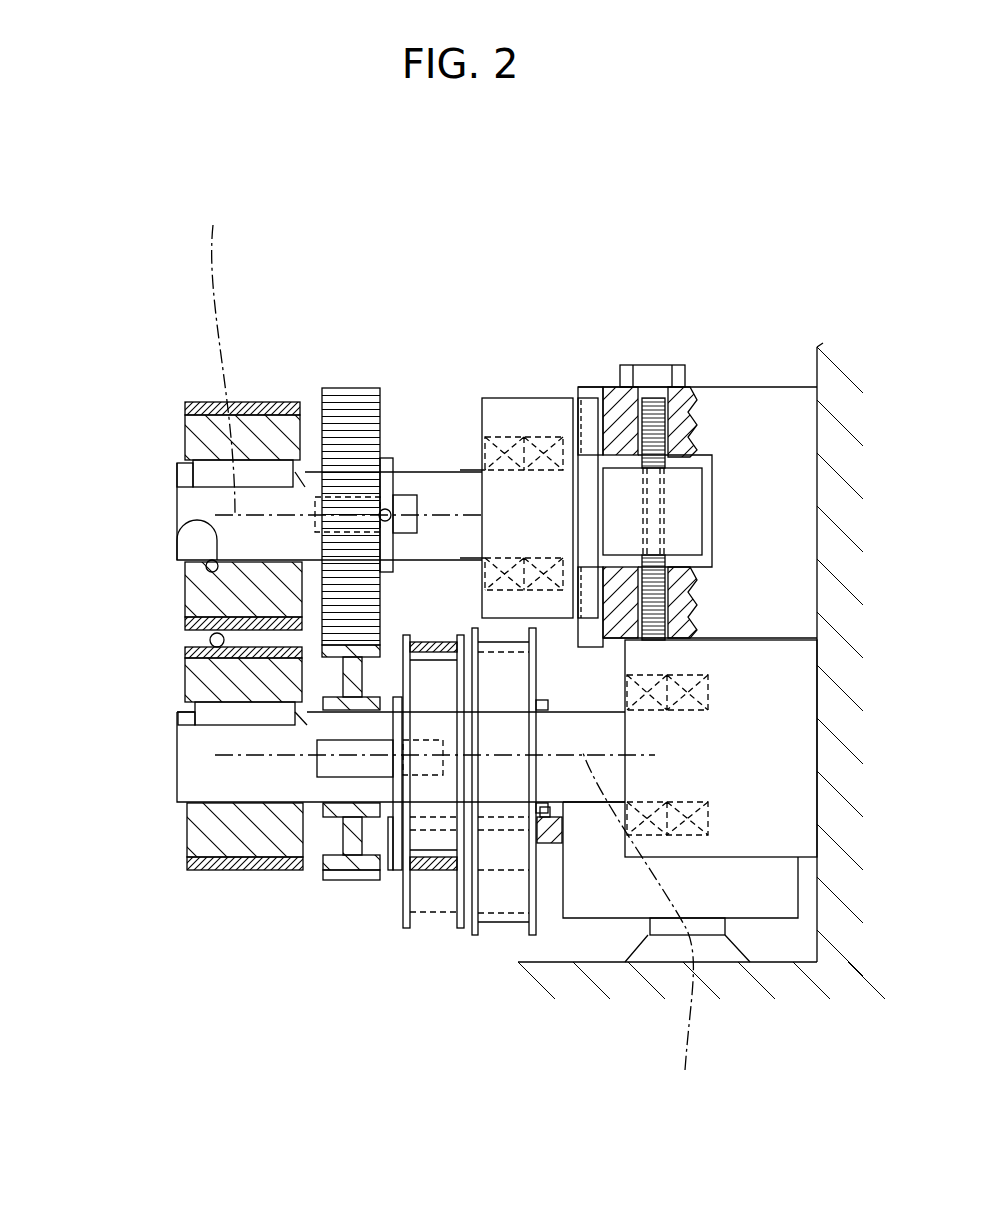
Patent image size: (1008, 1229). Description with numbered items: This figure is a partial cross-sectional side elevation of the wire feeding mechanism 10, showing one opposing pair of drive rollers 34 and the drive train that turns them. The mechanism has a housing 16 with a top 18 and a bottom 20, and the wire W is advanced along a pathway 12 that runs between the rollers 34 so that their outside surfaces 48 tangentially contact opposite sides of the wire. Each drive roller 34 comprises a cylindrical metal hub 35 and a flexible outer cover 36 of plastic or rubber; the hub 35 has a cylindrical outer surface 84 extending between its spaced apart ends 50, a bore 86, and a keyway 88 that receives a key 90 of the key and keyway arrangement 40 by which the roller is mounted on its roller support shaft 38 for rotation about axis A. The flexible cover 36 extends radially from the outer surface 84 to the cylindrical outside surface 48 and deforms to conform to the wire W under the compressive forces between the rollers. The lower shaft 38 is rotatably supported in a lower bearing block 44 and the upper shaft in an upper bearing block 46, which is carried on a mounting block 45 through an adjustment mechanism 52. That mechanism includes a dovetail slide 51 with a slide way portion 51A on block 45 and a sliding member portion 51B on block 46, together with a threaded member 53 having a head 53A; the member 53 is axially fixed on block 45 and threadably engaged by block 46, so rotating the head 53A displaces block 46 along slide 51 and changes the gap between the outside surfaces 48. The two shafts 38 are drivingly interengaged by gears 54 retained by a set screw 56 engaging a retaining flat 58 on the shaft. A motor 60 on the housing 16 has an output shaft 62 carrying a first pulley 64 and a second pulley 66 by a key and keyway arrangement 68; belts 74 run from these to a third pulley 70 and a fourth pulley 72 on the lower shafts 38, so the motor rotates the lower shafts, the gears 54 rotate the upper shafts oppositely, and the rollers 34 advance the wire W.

The wire feeding mechanism 10 is at (150, 232).
The pathway 12 is at (190, 641).
The housing 16 is at (817, 493).
The top 18 is at (819, 345).
The bottom 20 is at (789, 950).
The drive roller 34 is at (140, 428).
The hub 35 is at (182, 455).
The flexible cover 36 is at (182, 407).
The roller support shaft 38 is at (200, 762).
The key and keyway arrangement 40 is at (255, 455).
The lower bearing block 44 is at (787, 830).
The mounting block 45 is at (787, 537).
The upper bearing block 46 is at (495, 412).
The cylindrical outside surface 48 is at (236, 412).
The ends 50 is at (307, 425).
The dovetail slide 51 is at (590, 600).
The slide way portion 51A is at (590, 395).
The sliding member portion 51B is at (604, 420).
The adjustment mechanism 52 is at (682, 455).
The threaded member 53 is at (677, 615).
The head 53A is at (664, 365).
The gear 54 is at (316, 388).
The set screw 56 is at (400, 560).
The retaining flat 58 is at (400, 503).
The motor 60 is at (626, 897).
The output shaft 62 is at (557, 850).
The first pulley 64 is at (475, 935).
The second pulley 66 is at (405, 897).
The key and keyway arrangement 68 is at (540, 833).
The third pulley 70 is at (537, 683).
The fourth pulley 72 is at (405, 635).
The belt 74 is at (450, 645).
The cylindrical outer surface 84 is at (210, 423).
The bore 86 is at (180, 548).
The keyway 88 is at (192, 478).
The key 90 is at (210, 478).
The wire W is at (183, 613).
The axis A is at (449, 647).